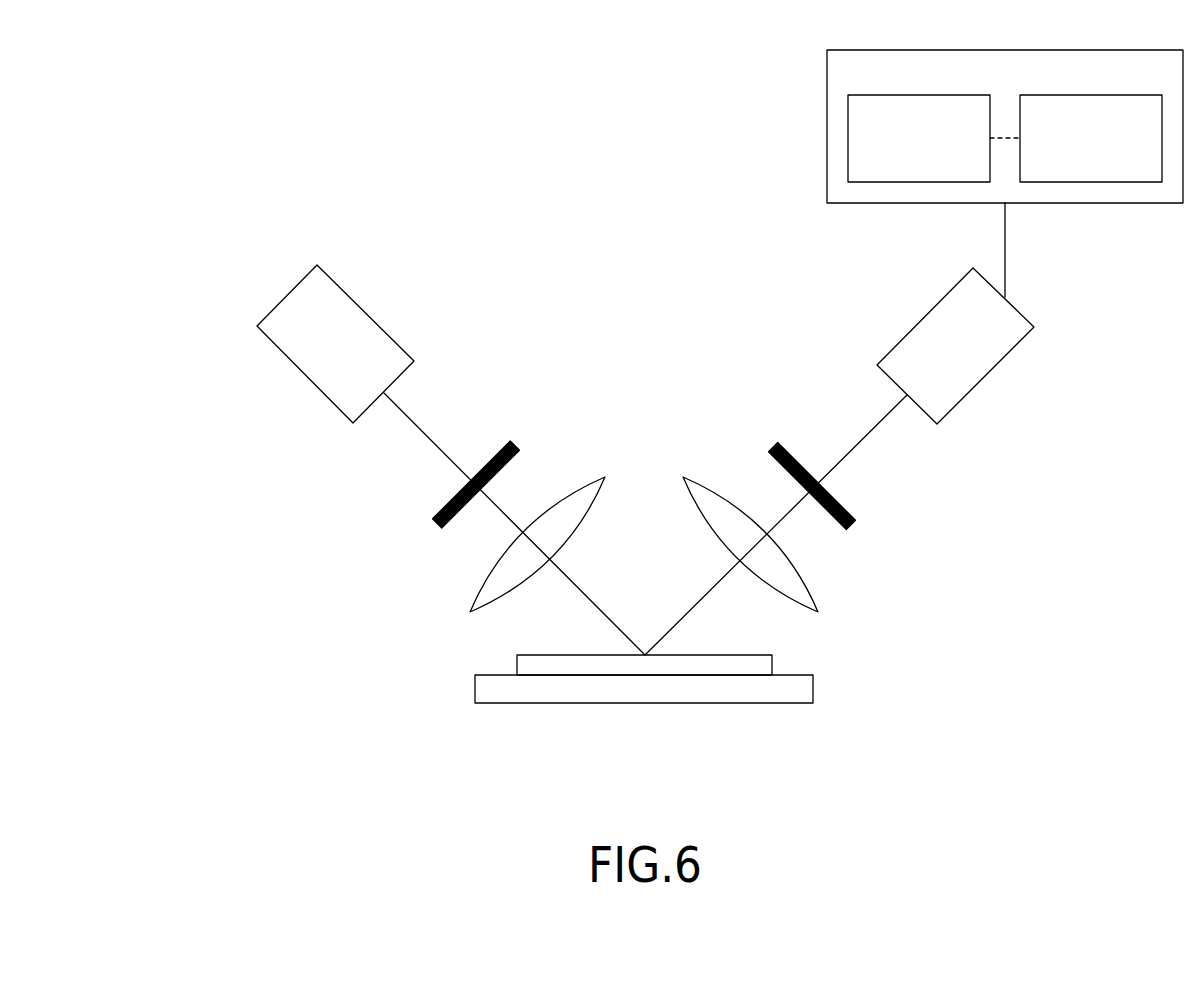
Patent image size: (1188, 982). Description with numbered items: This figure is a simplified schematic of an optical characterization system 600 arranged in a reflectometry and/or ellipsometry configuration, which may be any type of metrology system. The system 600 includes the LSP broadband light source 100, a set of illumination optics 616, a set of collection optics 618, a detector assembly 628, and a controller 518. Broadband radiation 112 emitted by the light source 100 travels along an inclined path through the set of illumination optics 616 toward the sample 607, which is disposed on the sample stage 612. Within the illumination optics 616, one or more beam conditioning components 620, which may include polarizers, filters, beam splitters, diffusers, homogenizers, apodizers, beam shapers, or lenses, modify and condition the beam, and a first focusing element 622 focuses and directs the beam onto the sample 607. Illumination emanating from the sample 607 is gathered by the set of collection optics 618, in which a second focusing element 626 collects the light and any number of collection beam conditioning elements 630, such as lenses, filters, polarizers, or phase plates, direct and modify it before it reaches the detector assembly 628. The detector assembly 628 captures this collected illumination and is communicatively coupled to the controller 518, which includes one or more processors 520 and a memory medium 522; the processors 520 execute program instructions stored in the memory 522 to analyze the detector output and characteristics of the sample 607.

The optical characterization system 600 is at (174, 69).
The LSP broadband light source 100 is at (356, 357).
The broadband radiation 112 is at (428, 432).
The set of illumination optics 616 is at (337, 480).
The set of collection optics 618 is at (952, 478).
The beam conditioning components 620 is at (446, 503).
The first focusing element 622 is at (478, 588).
The second focusing element 626 is at (812, 584).
The collection beam conditioning elements 630 is at (846, 502).
The detector assembly 628 is at (978, 355).
The controller 518 is at (1026, 84).
The processors 520 is at (939, 149).
The memory medium 522 is at (1111, 149).
The sample 607 is at (772, 667).
The sample stage 612 is at (813, 690).